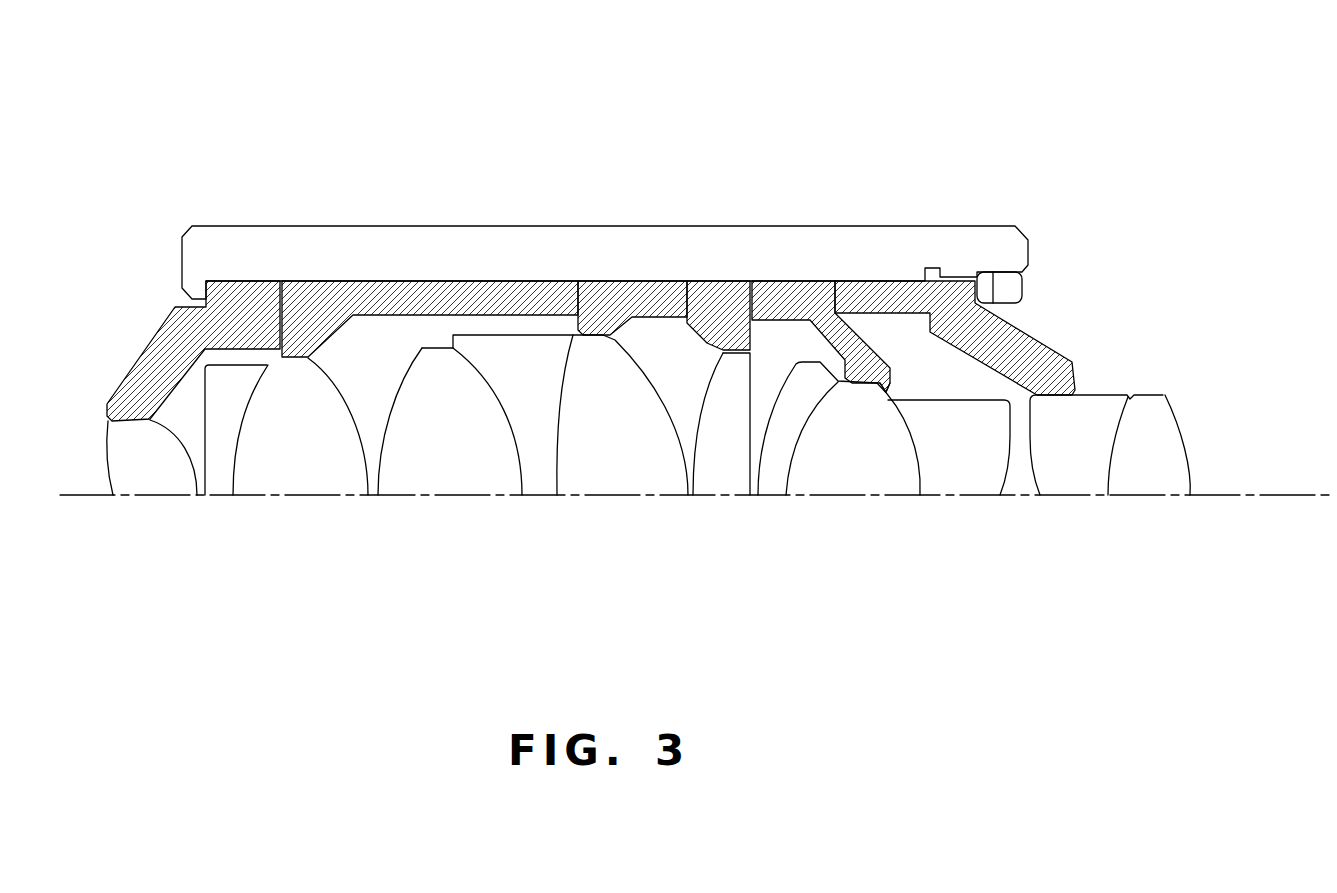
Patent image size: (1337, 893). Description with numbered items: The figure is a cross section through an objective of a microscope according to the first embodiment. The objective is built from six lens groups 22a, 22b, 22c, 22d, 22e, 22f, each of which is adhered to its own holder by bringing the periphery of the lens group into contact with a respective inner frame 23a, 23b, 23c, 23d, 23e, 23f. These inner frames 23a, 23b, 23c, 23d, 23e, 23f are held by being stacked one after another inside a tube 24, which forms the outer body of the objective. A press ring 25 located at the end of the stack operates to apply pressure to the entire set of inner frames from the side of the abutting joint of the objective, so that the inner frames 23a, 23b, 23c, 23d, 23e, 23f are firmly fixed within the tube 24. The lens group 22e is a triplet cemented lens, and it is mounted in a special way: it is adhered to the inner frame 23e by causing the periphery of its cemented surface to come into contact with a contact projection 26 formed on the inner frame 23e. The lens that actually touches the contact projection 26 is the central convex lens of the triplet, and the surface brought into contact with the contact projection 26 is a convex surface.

The lens group 22a is at (135, 478).
The lens group 22b is at (285, 470).
The lens group 22c is at (443, 470).
The lens group 22d is at (713, 478).
The lens group 22e is at (830, 475).
The lens group 22f is at (1068, 475).
The inner frame 23a is at (255, 298).
The inner frame 23b is at (383, 298).
The inner frame 23c is at (623, 293).
The inner frame 23d is at (700, 293).
The inner frame 23e is at (773, 295).
The inner frame 23f is at (873, 297).
The tube 24 is at (200, 238).
The press ring 25 is at (1005, 290).
The contact projection 26 is at (887, 392).